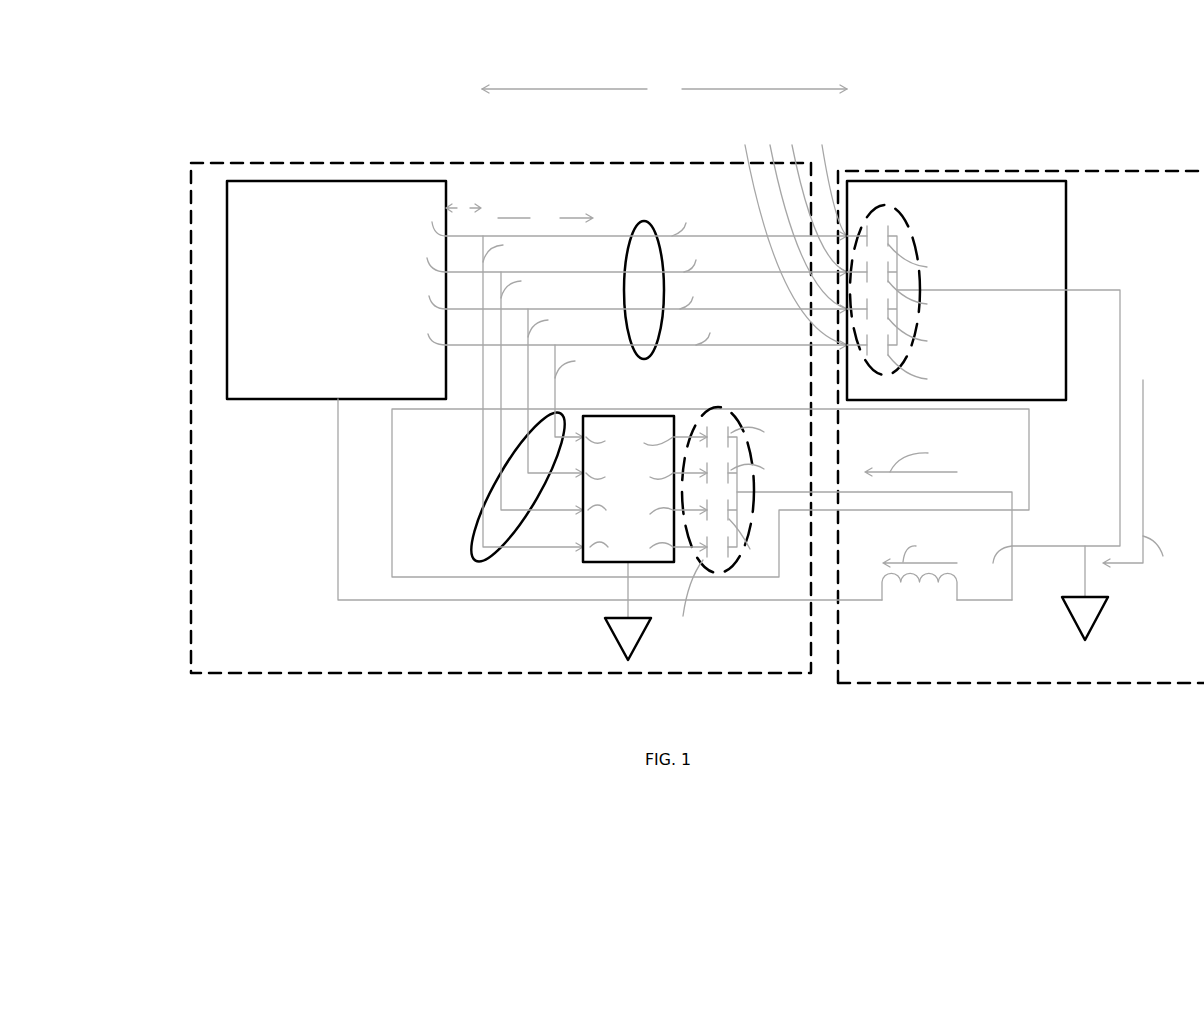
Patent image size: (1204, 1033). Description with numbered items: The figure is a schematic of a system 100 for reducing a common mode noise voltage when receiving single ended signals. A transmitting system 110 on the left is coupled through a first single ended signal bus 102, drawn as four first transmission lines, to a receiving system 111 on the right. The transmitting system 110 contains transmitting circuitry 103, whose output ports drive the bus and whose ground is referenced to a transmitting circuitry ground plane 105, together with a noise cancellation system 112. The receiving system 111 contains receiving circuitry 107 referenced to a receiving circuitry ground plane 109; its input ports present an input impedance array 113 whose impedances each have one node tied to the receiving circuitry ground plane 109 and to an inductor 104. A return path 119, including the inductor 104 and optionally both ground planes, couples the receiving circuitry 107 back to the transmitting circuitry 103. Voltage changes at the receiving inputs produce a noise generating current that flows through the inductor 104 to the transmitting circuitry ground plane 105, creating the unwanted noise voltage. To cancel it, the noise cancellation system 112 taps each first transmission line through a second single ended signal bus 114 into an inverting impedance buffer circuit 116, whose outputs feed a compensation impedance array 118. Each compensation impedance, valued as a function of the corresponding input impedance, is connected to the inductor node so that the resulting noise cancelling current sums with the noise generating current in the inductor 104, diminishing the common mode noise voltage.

The system 100 is at (814, 46).
The first single ended signal bus 102 is at (644, 221).
The transmitting circuitry 103 is at (354, 290).
The inductor 104 is at (931, 583).
The transmitting circuitry ground plane 105 is at (668, 648).
The receiving circuitry 107 is at (1019, 383).
The receiving circuitry ground plane 109 is at (1123, 633).
The transmitting system 110 is at (575, 128).
The receiving system 111 is at (1131, 142).
The noise cancellation system 112 is at (710, 504).
The input impedance array 113 is at (885, 205).
The second single ended signal bus 114 is at (475, 560).
The impedance buffer circuit 116 is at (628, 489).
The compensation impedance array 118 is at (716, 405).
The return path 119 is at (337, 467).